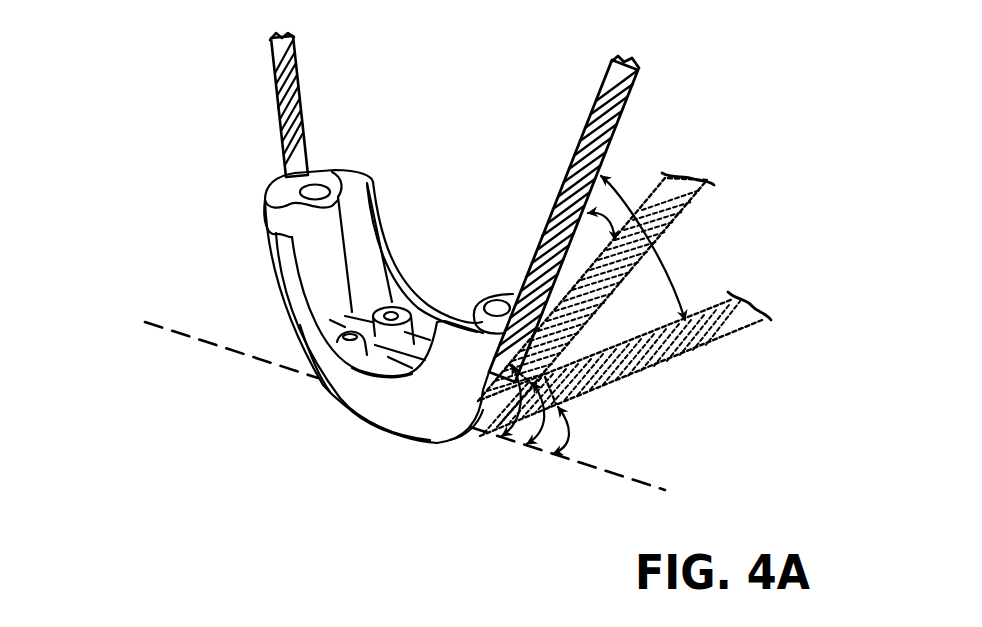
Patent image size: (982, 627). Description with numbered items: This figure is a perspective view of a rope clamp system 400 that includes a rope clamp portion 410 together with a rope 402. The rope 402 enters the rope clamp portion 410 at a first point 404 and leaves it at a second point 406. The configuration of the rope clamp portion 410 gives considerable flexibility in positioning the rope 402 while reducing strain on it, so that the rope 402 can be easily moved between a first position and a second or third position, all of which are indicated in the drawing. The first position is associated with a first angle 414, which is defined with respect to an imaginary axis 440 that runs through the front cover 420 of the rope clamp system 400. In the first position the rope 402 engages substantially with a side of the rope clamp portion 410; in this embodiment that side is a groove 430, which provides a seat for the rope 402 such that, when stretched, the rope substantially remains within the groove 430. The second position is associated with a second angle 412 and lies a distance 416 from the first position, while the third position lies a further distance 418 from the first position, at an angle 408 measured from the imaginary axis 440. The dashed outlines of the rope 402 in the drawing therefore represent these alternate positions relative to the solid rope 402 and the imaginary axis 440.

The rope clamp system 400 is at (176, 190).
The rope 402 is at (268, 103).
The first point 404 is at (293, 328).
The second point 406 is at (470, 428).
The angle 408 is at (563, 447).
The rope clamp portion 410 is at (330, 370).
The second angle 412 is at (542, 440).
The first angle 414 is at (520, 437).
The distance 416 is at (606, 212).
The distance 418 is at (678, 280).
The front cover 420 is at (367, 428).
The groove 430 is at (315, 245).
The imaginary axis 440 is at (230, 350).